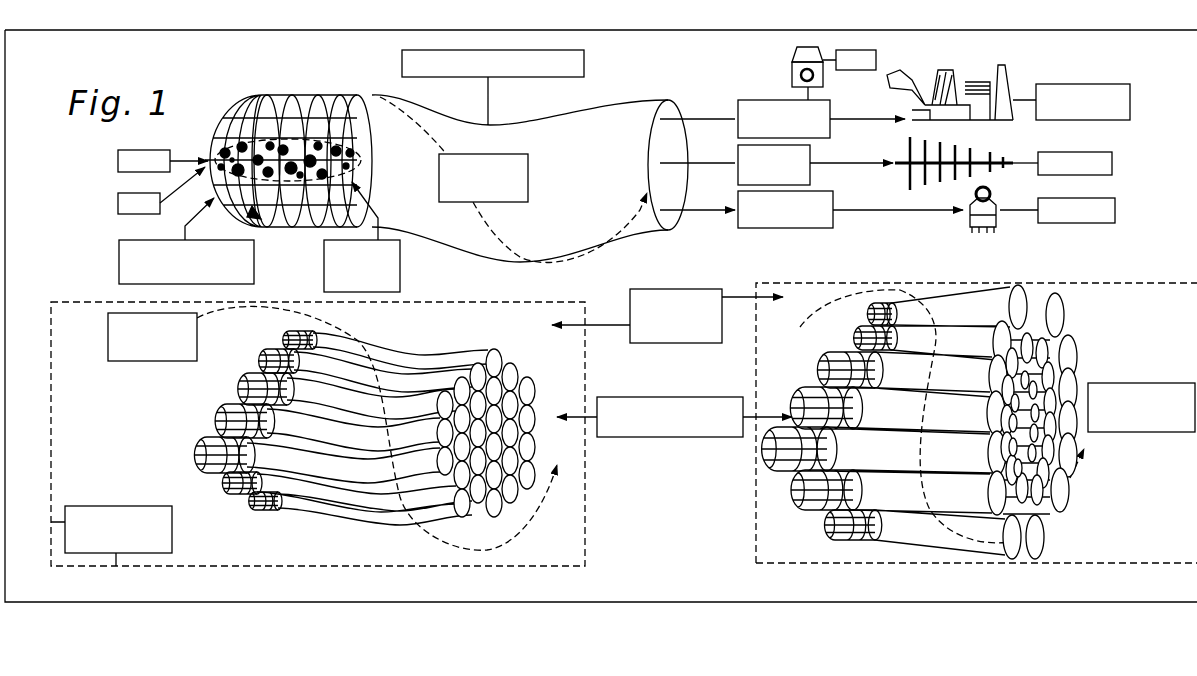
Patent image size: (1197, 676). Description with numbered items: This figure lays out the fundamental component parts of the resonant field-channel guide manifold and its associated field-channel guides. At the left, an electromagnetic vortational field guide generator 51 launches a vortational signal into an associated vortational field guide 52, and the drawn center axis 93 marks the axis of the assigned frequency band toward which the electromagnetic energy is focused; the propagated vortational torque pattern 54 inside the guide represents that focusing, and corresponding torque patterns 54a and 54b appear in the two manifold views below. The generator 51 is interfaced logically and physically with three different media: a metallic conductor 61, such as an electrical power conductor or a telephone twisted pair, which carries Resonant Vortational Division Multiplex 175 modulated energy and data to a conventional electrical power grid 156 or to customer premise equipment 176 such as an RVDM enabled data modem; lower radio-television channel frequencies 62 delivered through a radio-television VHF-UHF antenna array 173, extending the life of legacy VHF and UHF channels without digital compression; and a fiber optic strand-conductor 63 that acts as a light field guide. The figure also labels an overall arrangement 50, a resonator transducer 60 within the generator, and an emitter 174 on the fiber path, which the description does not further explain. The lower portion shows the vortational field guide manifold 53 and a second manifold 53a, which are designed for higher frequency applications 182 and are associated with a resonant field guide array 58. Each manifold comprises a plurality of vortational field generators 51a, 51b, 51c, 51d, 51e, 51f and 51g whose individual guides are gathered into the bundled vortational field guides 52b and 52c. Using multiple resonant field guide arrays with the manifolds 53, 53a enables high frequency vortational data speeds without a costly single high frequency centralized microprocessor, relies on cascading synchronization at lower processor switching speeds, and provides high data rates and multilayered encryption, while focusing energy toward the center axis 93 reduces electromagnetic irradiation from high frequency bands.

The vortational field transmission system 50 is at (14, 236).
The vortational field generator 51 is at (111, 270).
The vortational field guide 52 is at (388, 71).
The vortational field guide manifold 53 is at (92, 492).
The vortational torque pattern 54 is at (520, 202).
The scalable field guide array 58 is at (650, 343).
The primary resonator transducer 60 is at (428, 270).
The metallic conductor 61 is at (730, 112).
The radio-television channel frequencies 62 is at (730, 159).
The fiber optic strand-conductor 63 is at (722, 238).
The center axis 93 is at (111, 222).
The electrical power grid 156 is at (1148, 113).
The radio-television VHF-UHF antenna array 173 is at (1133, 167).
The emitter 174 is at (1133, 221).
The Resonant Vortational Division Multiplex 175 is at (110, 169).
The customer premise equipment 176 is at (898, 61).
The higher frequency applications 182 is at (643, 437).
The vortational field generator 51a is at (286, 334).
The vortational field generator 51b is at (260, 355).
The vortational field generator 51c is at (246, 383).
The vortational field generator 51d is at (220, 425).
The vortational field generator 51e is at (200, 460).
The vortational field generator 51f is at (224, 490).
The vortational field generator 51g is at (258, 509).
The vortational field guide 52b is at (536, 371).
The vortational field guide 52c is at (1050, 352).
The vortational field guide manifold 53a is at (1130, 370).
The vortational torque pattern 54a is at (162, 361).
The vortational torque pattern 54b is at (932, 416).